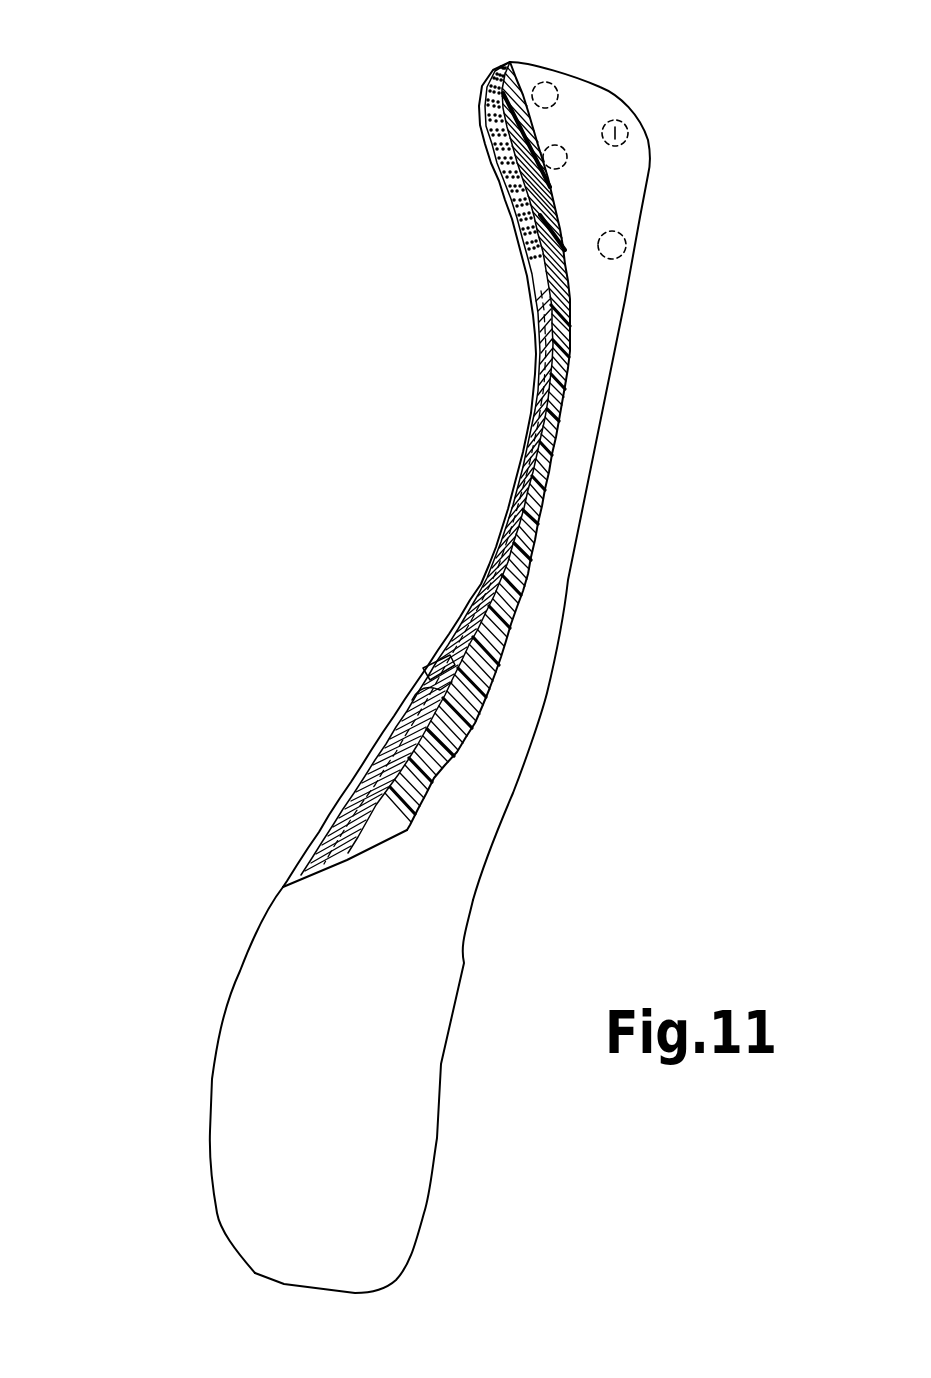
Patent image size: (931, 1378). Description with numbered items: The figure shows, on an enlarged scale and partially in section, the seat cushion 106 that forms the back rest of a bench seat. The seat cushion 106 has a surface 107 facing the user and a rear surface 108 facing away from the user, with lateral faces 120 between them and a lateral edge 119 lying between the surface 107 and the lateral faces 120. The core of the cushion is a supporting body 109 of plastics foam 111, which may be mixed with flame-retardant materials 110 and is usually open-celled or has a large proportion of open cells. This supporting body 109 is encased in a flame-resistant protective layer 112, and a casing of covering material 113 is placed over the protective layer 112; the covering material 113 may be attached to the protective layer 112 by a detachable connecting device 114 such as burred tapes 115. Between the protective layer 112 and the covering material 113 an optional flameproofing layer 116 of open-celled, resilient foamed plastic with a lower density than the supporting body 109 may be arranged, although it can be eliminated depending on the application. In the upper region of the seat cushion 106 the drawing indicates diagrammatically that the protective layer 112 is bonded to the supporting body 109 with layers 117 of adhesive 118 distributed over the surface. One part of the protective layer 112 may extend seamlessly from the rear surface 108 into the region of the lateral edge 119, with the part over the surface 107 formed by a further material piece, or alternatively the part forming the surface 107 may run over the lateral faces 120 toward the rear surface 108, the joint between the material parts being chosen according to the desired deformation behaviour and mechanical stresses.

The seat cushion 106 is at (719, 70).
The surface 107 is at (197, 964).
The rear surface 108 is at (656, 246).
The supporting body 109 is at (413, 790).
The flame-retardant materials 110 is at (513, 617).
The plastics foam 111 is at (538, 535).
The protective layer 112 is at (520, 223).
The covering material 113 is at (477, 156).
The detachable connecting device 114 is at (414, 654).
The burred tapes 115 is at (425, 700).
The flameproofing layer 116 is at (503, 197).
The layers of adhesive 117 is at (630, 150).
The adhesive 118 is at (620, 110).
The lateral edge 119 is at (206, 1134).
The lateral faces 120 is at (327, 1164).